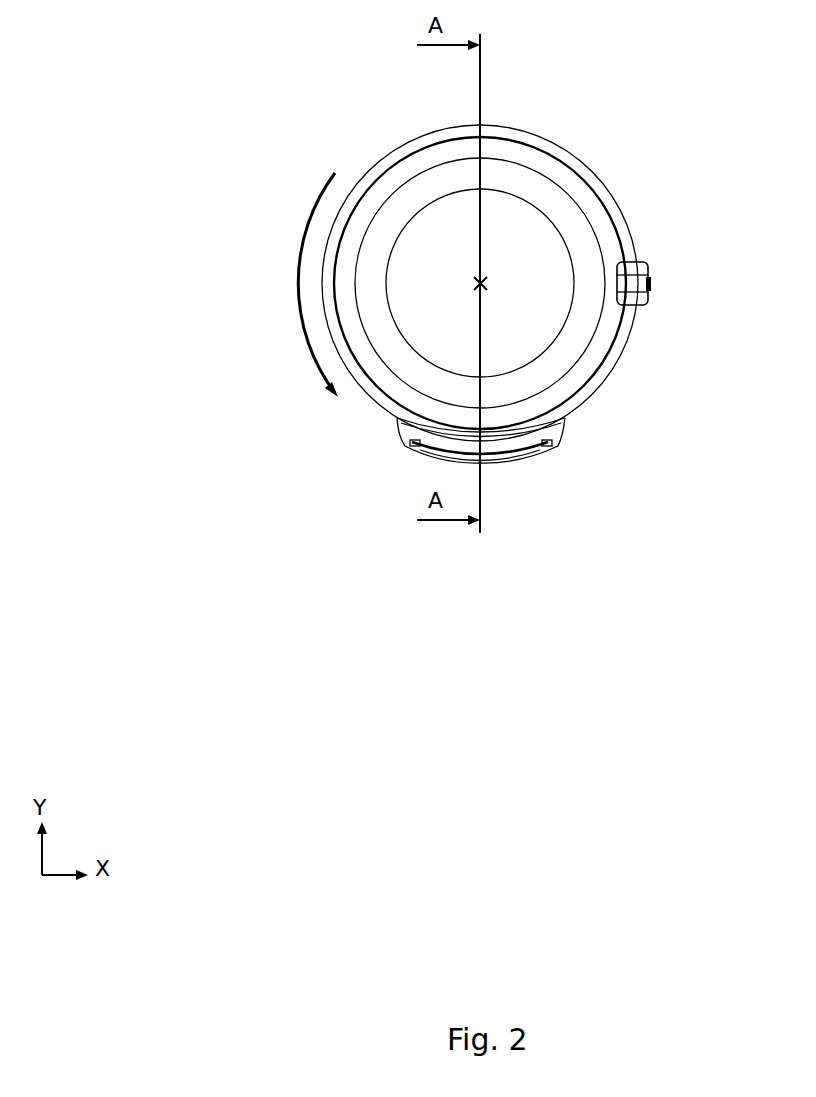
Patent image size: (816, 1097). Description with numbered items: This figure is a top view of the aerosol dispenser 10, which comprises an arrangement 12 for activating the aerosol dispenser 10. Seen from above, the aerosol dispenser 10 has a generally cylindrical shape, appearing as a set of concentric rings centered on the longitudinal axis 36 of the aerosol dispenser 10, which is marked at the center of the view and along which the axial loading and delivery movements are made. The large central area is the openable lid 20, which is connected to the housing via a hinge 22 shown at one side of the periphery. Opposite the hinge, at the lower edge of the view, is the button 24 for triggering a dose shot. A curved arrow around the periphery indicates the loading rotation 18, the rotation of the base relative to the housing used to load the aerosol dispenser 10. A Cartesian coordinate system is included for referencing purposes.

The aerosol dispenser 10 is at (270, 88).
The arrangement for activating the aerosol dispenser 12 is at (283, 176).
The loading rotation 18 is at (292, 285).
The openable lid 20 is at (452, 296).
The hinge 22 is at (632, 283).
The button 24 is at (510, 458).
The longitudinal axis 36 is at (487, 283).